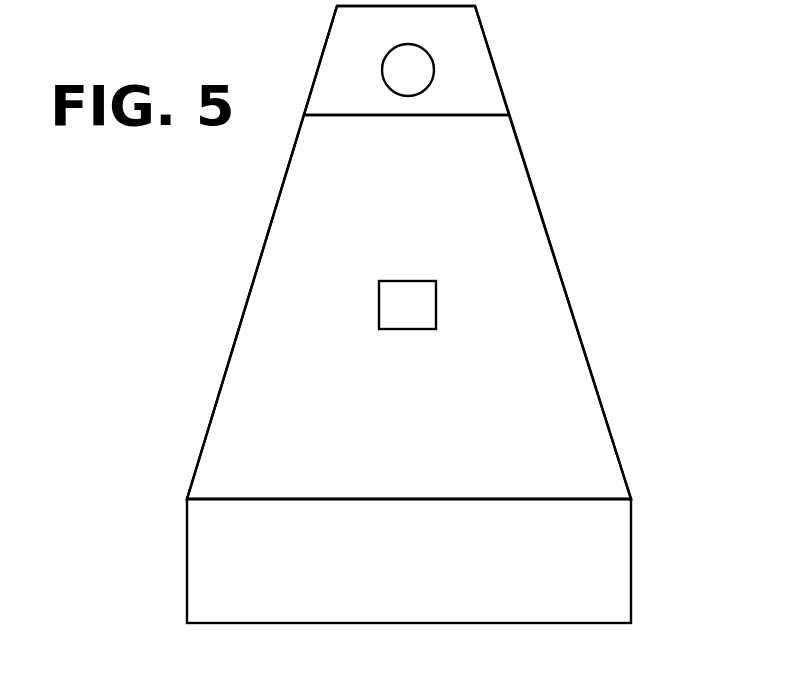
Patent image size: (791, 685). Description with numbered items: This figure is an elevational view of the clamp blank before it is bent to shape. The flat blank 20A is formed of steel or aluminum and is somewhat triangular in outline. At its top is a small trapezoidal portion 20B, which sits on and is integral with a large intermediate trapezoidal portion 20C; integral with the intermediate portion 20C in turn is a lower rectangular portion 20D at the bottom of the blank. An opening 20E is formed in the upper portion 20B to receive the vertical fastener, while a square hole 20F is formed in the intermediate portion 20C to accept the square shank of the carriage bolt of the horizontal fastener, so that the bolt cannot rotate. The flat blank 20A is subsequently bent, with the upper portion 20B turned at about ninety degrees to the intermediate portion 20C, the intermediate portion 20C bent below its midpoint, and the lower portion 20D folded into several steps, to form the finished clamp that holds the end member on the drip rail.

The flat blank 20A is at (558, 257).
The small trapezoidal portion 20B is at (438, 39).
The large intermediate trapezoidal portion 20C is at (436, 233).
The lower rectangular portion 20D is at (441, 578).
The opening 20E is at (416, 70).
The square hole 20F is at (418, 309).